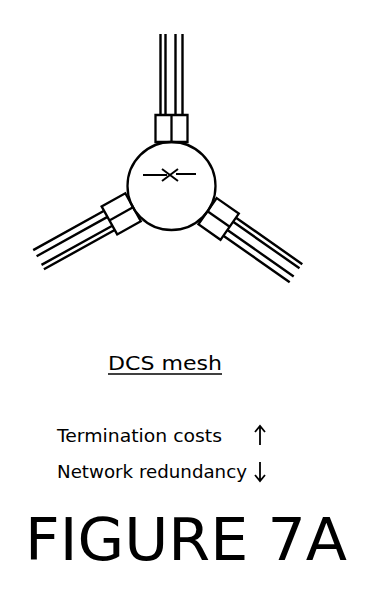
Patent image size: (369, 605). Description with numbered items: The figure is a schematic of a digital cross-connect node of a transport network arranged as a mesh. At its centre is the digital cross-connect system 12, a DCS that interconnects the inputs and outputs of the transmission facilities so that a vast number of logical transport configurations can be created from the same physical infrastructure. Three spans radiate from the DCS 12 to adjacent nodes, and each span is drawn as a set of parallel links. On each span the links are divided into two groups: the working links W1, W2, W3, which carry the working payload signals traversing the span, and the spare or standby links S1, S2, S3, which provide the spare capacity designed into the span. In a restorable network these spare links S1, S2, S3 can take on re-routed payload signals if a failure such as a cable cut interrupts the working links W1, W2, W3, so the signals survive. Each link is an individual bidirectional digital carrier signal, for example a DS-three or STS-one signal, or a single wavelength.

The digital cross-connect system 12 is at (212, 172).
The service fibers port 1 S1 is at (70, 233).
The working fibers port 1 W1 is at (78, 250).
The service fibers port 2 S2 is at (267, 243).
The working fibers port 2 W2 is at (258, 256).
The service fibers port 3 S3 is at (148, 74).
The working fibers port 3 W3 is at (194, 74).